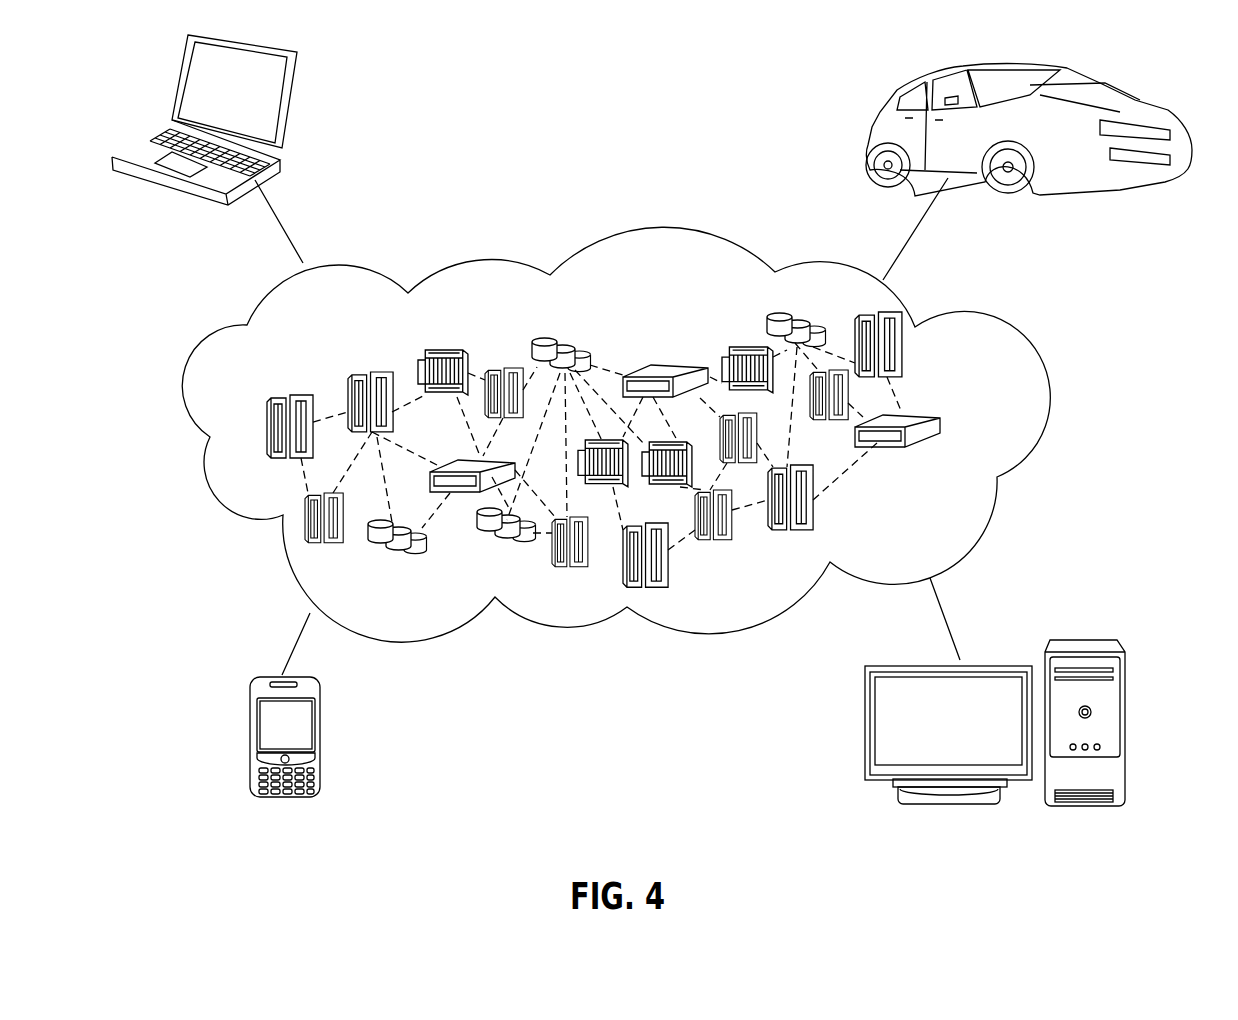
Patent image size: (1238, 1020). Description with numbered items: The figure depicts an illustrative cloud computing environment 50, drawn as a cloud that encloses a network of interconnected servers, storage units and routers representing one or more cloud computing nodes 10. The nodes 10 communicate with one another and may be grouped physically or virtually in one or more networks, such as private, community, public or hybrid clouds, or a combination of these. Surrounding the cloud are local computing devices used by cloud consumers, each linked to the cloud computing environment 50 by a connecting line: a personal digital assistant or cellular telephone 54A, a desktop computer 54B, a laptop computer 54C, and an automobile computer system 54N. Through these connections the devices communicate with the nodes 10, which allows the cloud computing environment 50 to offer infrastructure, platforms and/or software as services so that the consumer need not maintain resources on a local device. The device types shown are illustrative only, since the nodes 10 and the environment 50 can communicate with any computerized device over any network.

The cloud computing node 10 is at (983, 427).
The cloud computing environment 50 is at (1005, 343).
The personal digital assistant or cellular telephone 54A is at (250, 742).
The desktop computer 54B is at (1090, 640).
The laptop computer 54C is at (292, 103).
The automobile computer system 54N is at (876, 113).